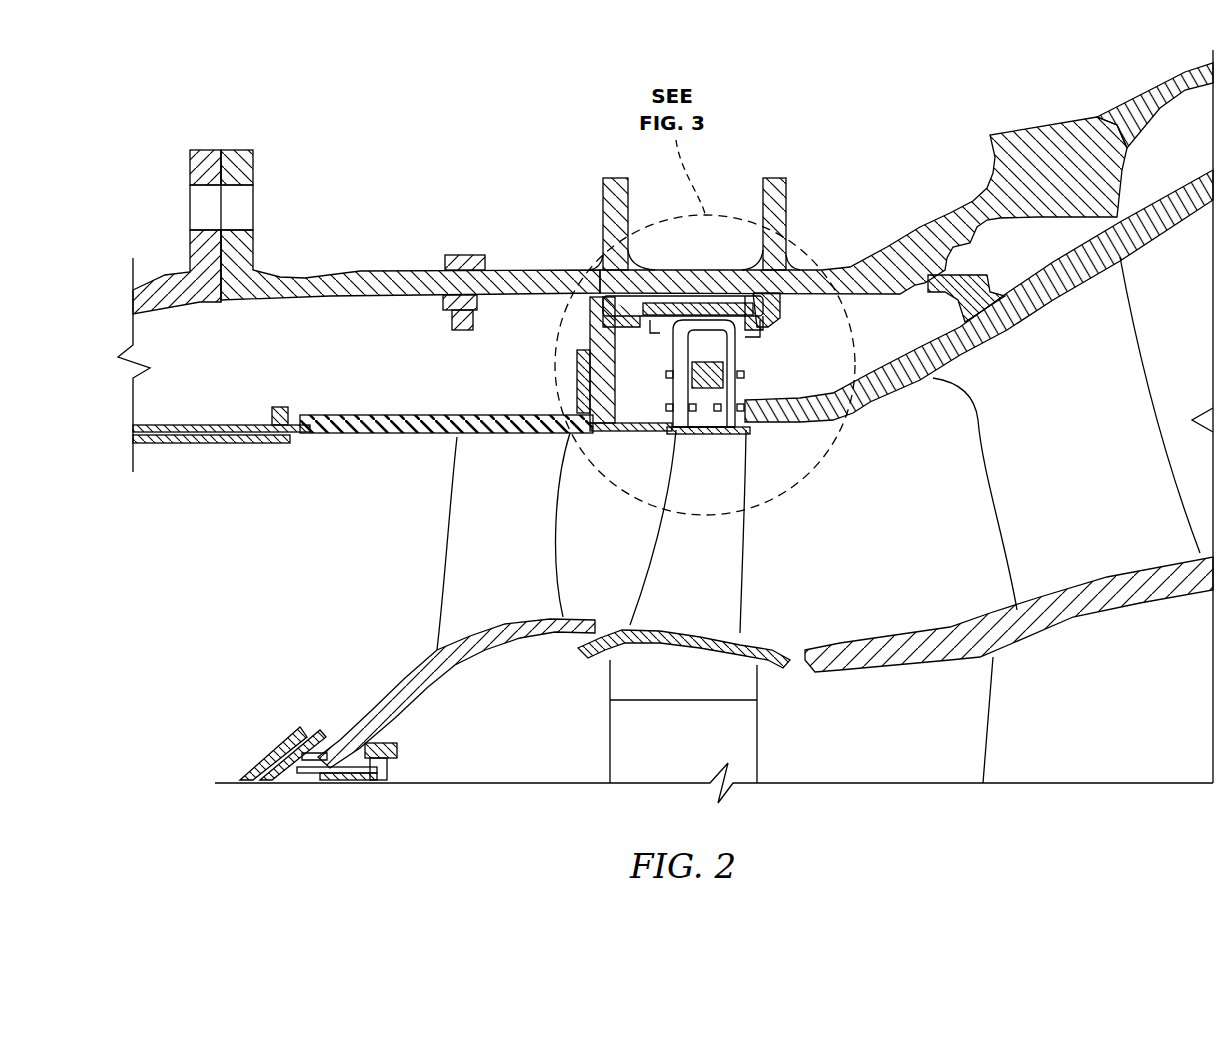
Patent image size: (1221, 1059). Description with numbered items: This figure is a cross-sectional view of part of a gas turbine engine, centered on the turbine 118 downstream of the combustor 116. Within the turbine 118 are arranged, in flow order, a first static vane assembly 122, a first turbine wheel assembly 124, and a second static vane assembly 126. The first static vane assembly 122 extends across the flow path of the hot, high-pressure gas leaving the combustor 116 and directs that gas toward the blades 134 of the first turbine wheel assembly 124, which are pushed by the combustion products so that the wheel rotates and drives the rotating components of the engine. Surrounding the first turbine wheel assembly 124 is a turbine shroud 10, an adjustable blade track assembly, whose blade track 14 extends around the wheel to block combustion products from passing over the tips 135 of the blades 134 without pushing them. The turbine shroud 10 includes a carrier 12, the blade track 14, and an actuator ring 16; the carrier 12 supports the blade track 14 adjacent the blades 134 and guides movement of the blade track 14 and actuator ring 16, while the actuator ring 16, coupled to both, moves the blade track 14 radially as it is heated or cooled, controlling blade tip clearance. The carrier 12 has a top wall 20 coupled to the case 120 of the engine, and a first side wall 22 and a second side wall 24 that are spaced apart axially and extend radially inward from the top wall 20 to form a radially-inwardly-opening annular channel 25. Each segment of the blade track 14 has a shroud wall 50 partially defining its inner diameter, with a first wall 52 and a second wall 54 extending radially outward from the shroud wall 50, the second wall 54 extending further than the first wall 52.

The turbine shroud 10 is at (791, 334).
The carrier 12 is at (660, 318).
The blade track 14 is at (727, 435).
The actuator ring 16 is at (790, 333).
The top wall 20 is at (671, 345).
The first side wall 22 is at (740, 370).
The second side wall 24 is at (577, 352).
The annular channel 25 is at (722, 335).
The shroud wall 50 is at (680, 437).
The first wall 52 is at (752, 430).
The second wall 54 is at (671, 418).
The combustor 116 is at (255, 690).
The turbine 118 is at (418, 363).
The case 120 is at (400, 278).
The first static vane assembly 122 is at (460, 555).
The first turbine wheel assembly 124 is at (600, 720).
The second static vane assembly 126 is at (1037, 550).
The blades 134 is at (670, 592).
The tips 135 is at (714, 435).